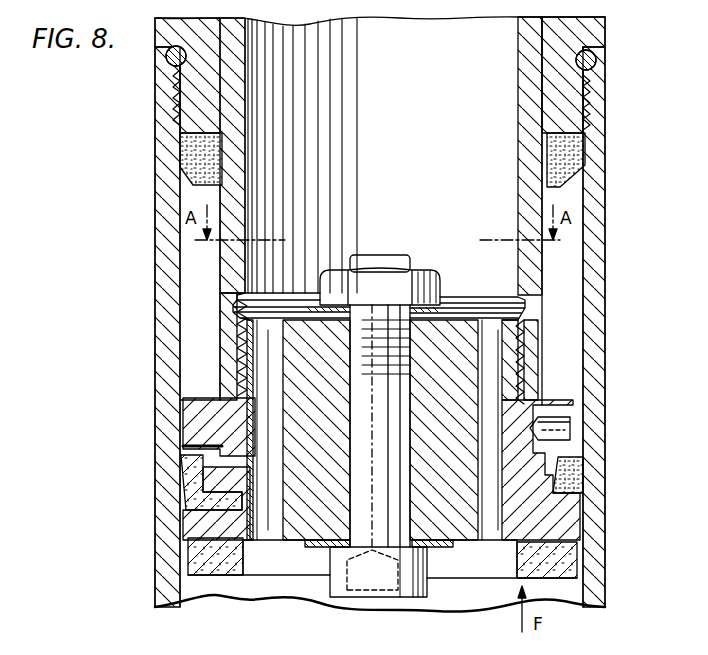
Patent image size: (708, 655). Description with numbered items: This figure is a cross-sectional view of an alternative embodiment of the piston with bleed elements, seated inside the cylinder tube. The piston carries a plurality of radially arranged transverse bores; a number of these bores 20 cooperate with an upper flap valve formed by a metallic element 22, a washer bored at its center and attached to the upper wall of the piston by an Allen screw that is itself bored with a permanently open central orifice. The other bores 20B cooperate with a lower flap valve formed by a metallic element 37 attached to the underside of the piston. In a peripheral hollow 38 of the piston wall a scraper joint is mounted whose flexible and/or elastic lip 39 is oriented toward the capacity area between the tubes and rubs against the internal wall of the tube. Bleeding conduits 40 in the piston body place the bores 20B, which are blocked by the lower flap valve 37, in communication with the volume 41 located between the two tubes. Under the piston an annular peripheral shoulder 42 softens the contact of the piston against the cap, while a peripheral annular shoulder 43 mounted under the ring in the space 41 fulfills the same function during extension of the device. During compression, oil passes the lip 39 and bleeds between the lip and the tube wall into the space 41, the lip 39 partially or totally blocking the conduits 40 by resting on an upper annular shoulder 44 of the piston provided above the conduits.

The transverse bores 20 is at (497, 378).
The other transverse bores 20B is at (262, 513).
The metallic element 22 is at (455, 318).
The metallic element 37 is at (278, 545).
The peripheral hollow 38 is at (517, 503).
The lip 39 is at (567, 480).
The conduits 40 is at (222, 455).
The volume 41 is at (567, 263).
The annular peripheral shoulder 42 is at (203, 557).
The peripheral annular shoulder 43 is at (588, 147).
The upper annular shoulder 44 is at (213, 411).